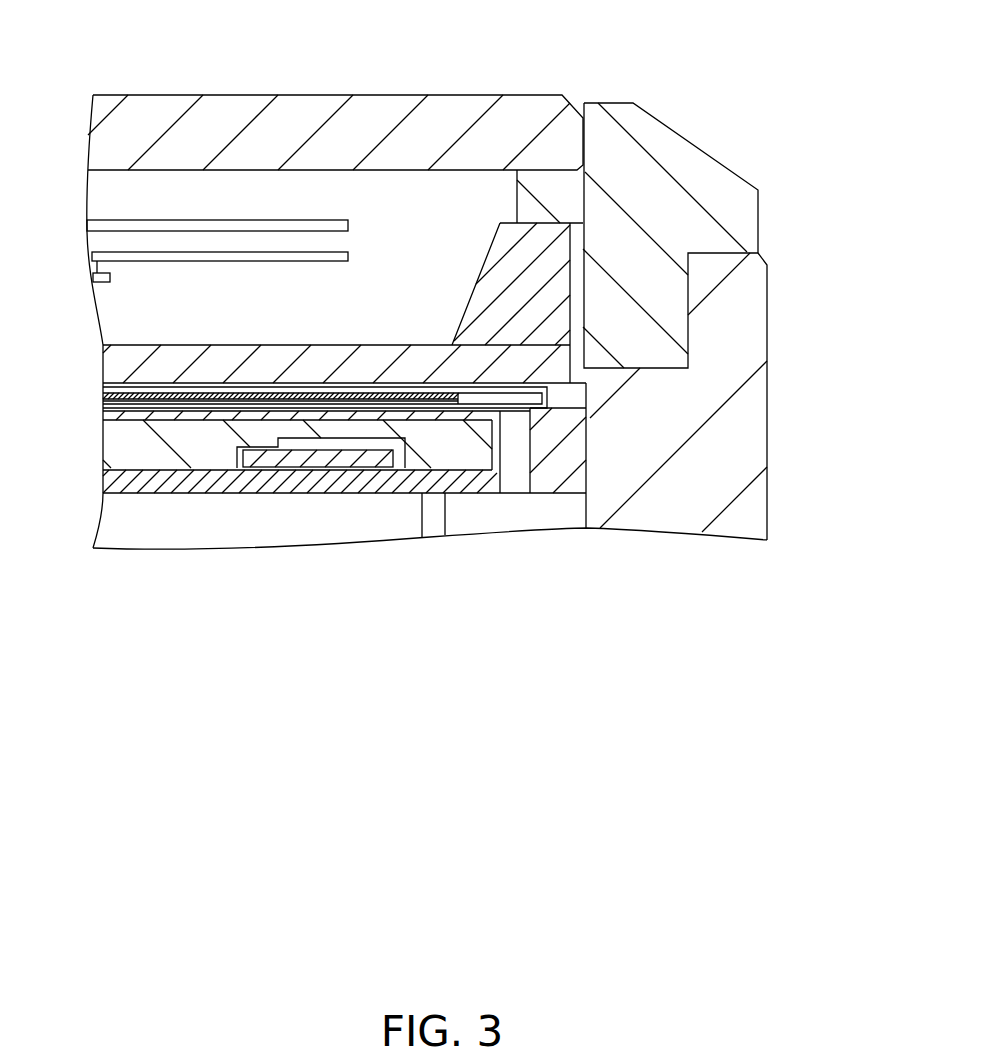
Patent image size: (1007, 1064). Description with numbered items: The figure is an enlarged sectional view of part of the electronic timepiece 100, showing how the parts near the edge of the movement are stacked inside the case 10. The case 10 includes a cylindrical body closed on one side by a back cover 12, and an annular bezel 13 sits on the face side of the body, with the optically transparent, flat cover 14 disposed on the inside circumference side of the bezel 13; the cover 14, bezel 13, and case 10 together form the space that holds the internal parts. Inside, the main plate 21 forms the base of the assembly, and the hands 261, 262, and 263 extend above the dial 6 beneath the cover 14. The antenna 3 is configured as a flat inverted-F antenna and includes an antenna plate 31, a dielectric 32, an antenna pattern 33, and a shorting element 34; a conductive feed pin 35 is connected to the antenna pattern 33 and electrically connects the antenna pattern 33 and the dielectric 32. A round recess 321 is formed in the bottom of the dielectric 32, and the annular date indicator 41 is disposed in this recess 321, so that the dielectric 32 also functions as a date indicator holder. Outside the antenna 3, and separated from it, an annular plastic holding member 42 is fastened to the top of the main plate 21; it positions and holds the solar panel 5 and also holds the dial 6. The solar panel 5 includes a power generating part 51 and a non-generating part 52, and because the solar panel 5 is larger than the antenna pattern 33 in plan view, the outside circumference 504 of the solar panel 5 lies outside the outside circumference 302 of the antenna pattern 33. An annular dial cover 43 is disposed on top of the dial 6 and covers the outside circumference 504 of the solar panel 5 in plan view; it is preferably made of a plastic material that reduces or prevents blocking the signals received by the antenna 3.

The electronic timepiece 100 is at (668, 88).
The case 10 is at (775, 297).
The back cover 12 is at (748, 350).
The bezel 13 is at (710, 170).
The cover 14 is at (307, 117).
The main plate 21 is at (207, 527).
The hand 261 is at (173, 225).
The hand 262 is at (130, 260).
The hand 263 is at (92, 235).
The antenna 3 is at (487, 536).
The antenna plate 31 is at (462, 455).
The dielectric 32 is at (478, 440).
The antenna pattern 33 is at (497, 440).
The shorting element 34 is at (522, 465).
The feed pin 35 is at (407, 556).
The outside circumference of the antenna pattern 302 is at (497, 413).
The recess 321 is at (243, 447).
The date indicator 41 is at (273, 462).
The holding member 42 is at (552, 478).
The dial cover 43 is at (537, 238).
The solar panel 5 is at (487, 522).
The power generating part 51 is at (343, 410).
The non-generating part 52 is at (303, 403).
The outside circumference of the solar panel 504 is at (548, 400).
The dial 6 is at (127, 352).